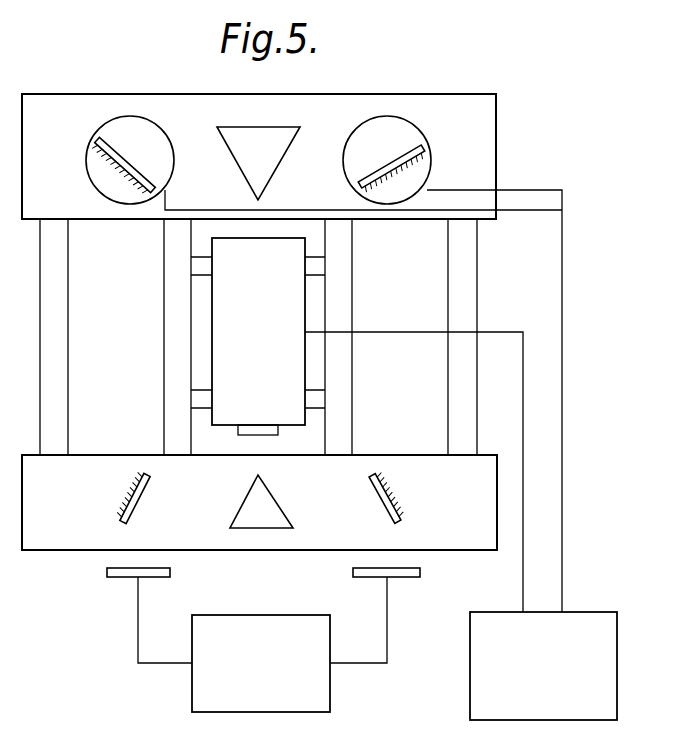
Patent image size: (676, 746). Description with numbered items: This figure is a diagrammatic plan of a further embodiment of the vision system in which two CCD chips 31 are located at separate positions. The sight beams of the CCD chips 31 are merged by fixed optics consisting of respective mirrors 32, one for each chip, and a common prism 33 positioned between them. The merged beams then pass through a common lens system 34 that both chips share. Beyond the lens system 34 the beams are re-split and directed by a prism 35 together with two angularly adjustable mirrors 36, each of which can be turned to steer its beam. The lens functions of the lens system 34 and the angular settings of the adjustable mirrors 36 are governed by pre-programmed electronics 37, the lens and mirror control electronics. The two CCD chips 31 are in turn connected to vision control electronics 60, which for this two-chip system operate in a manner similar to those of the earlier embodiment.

The CCD chip 31 is at (125, 575).
The mirror 32 is at (143, 510).
The common prism 33 is at (266, 518).
The common lens system 34 is at (293, 370).
The prism 35 is at (272, 142).
The angularly adjustable mirror 36 is at (110, 140).
The pre-programmed electronics 37 is at (482, 670).
The vision control electronics 60 is at (325, 706).